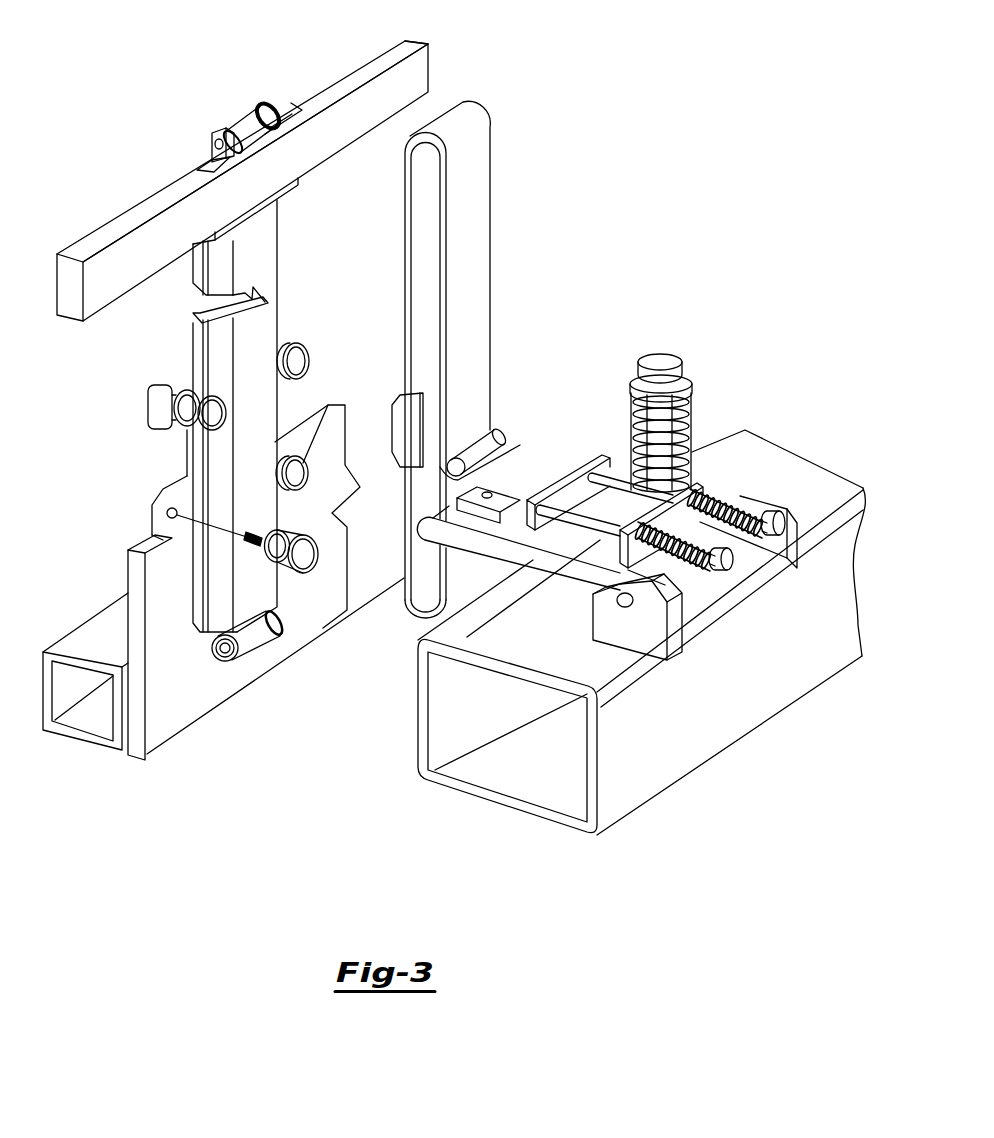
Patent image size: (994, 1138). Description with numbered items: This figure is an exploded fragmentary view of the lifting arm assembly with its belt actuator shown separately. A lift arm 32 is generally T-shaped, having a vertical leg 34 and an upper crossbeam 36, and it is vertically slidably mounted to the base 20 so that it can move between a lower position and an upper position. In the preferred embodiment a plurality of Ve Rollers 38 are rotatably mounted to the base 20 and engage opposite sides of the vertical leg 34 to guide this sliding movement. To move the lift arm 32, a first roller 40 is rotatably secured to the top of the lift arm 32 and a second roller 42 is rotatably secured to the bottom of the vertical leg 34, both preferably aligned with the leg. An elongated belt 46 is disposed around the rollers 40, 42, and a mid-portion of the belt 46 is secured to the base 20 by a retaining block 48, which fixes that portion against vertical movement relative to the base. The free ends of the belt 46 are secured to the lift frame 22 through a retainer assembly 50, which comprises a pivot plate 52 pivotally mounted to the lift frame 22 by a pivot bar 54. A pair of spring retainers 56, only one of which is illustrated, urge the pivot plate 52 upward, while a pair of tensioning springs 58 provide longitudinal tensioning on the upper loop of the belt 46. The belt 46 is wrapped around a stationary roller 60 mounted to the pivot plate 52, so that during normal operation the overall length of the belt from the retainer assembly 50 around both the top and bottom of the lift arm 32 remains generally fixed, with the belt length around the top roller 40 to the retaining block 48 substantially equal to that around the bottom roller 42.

The base 20 is at (70, 732).
The lift frame 22 is at (667, 770).
The lift arm 32 is at (433, 62).
The vertical leg 34 is at (207, 350).
The upper crossbeam 36 is at (372, 62).
The Ve Rollers 38 is at (345, 405).
The first roller 40 is at (245, 120).
The second roller 42 is at (257, 641).
The elongated belt 46 is at (470, 208).
The retaining block 48 is at (498, 420).
The retainer assembly 50 is at (528, 602).
The pivot plate 52 is at (503, 552).
The pivot bar 54 is at (618, 608).
The spring retainers 56 is at (688, 358).
The tensioning springs 58 is at (697, 543).
The stationary roller 60 is at (497, 438).